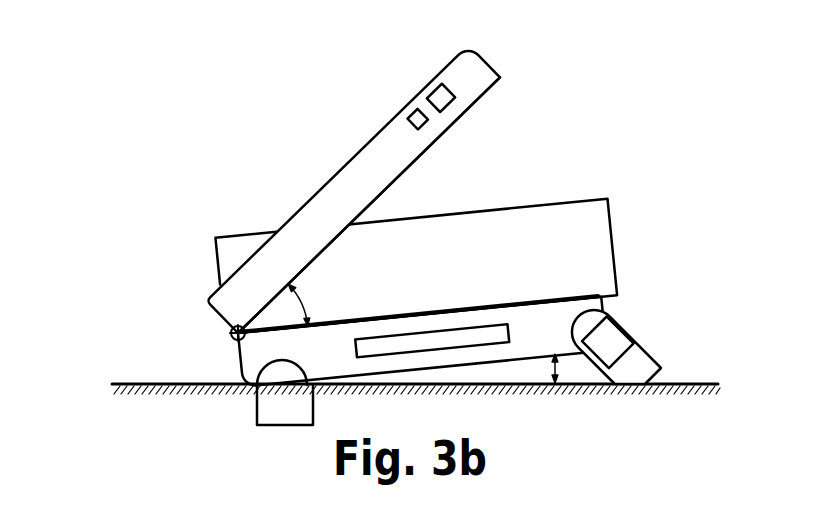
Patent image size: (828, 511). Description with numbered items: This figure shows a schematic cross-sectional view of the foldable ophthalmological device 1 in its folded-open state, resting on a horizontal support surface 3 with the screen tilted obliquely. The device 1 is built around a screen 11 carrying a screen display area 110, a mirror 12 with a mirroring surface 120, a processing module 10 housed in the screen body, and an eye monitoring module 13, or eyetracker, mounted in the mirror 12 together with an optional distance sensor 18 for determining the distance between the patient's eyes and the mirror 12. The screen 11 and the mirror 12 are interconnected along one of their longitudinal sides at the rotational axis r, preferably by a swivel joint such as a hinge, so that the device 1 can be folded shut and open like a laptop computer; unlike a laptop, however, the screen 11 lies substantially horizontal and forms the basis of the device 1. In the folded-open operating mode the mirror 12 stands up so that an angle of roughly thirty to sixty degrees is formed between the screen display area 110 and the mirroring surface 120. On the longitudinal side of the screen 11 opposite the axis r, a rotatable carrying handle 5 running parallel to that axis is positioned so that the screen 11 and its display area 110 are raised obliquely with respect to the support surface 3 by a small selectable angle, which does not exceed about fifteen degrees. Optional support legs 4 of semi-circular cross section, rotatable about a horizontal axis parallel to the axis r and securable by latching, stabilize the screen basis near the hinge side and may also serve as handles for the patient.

The ophthalmological device 1 is at (406, 244).
The horizontal support surface 3 is at (118, 392).
The support legs 4 is at (282, 372).
The carrying handle 5 is at (623, 347).
The processing module 10 is at (388, 348).
The screen 11 is at (558, 342).
The mirror 12 is at (345, 173).
The eye monitoring module 13 is at (440, 97).
The distance sensor 18 is at (417, 117).
The screen display area 110 is at (462, 300).
The mirroring surface 120 is at (456, 131).
The rotational axis r is at (230, 332).